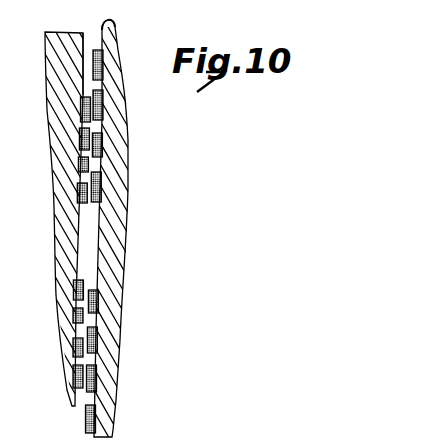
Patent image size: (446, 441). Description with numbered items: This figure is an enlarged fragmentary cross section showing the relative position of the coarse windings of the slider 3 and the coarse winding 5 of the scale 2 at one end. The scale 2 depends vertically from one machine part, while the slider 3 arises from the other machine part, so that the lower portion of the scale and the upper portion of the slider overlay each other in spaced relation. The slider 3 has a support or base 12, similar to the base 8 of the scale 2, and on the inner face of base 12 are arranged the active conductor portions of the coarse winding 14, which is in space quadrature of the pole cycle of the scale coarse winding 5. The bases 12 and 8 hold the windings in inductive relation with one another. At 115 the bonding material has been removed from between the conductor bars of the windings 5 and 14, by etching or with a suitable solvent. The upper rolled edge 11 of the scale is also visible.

The scale 2 is at (126, 190).
The slider 3 is at (49, 188).
The coarse winding of the scale 5 is at (80, 419).
The base 8 is at (118, 255).
The rolled edge 11 is at (99, 25).
The base 12 is at (58, 253).
The coarse winding 14 is at (86, 88).
The removed bonding material 115 is at (104, 89).